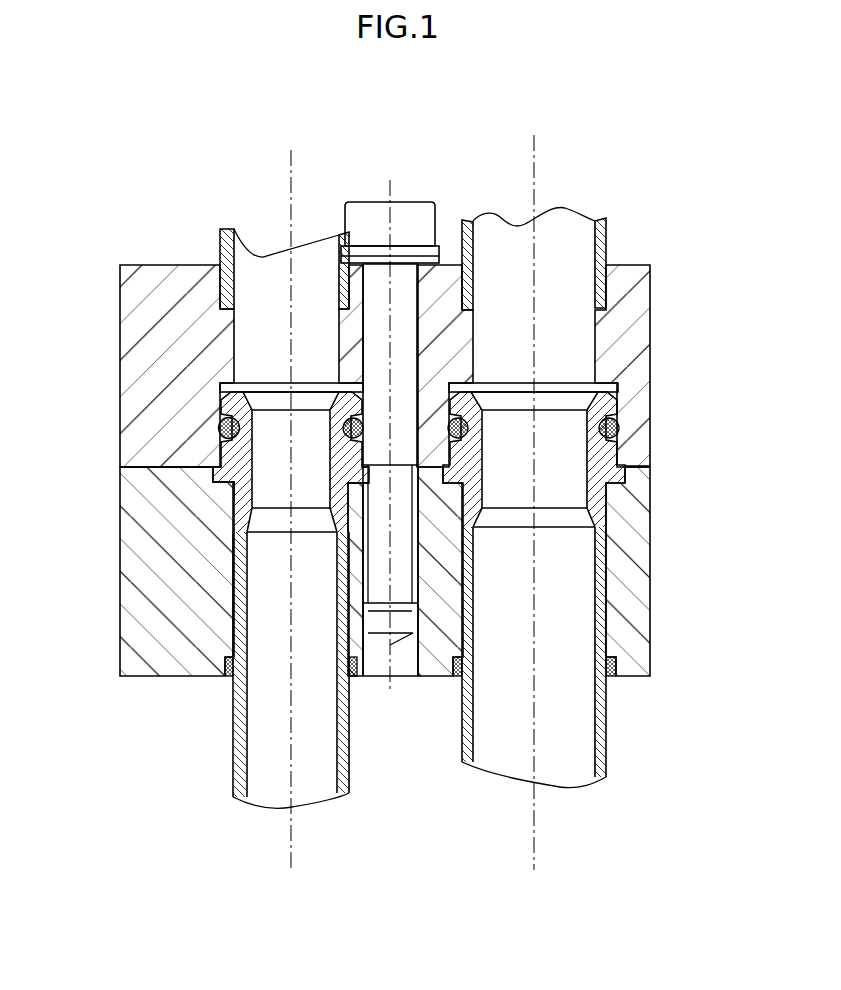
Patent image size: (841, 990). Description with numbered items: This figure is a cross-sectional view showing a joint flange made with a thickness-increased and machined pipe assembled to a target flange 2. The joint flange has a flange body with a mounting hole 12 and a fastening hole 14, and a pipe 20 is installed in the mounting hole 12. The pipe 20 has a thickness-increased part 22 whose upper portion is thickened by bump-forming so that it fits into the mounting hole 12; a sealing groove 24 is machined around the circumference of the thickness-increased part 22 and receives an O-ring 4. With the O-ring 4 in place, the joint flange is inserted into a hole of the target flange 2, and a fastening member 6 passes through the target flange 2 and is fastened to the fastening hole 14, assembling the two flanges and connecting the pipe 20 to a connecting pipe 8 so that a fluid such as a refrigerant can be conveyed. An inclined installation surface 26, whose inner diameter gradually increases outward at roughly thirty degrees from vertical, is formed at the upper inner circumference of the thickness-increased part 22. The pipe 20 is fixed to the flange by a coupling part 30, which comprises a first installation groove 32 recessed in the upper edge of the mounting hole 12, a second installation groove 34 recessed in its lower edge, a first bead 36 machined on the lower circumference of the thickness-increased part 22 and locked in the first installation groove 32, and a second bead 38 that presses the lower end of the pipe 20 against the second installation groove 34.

The target flange 2 is at (628, 320).
The O-ring 4 is at (620, 428).
The fastening member 6 is at (408, 218).
The connecting pipe 8 is at (601, 225).
The mounting hole 12 is at (590, 585).
The fastening hole 14 is at (418, 530).
The pipe 20 is at (233, 750).
The thickness-increased part 22 is at (219, 447).
The sealing groove 24 is at (219, 425).
The inclined installation surface 26 is at (257, 390).
The coupling part 30 is at (325, 639).
The first installation groove 32 is at (214, 494).
The second installation groove 34 is at (235, 646).
The first bead 36 is at (212, 475).
The second bead 38 is at (225, 672).